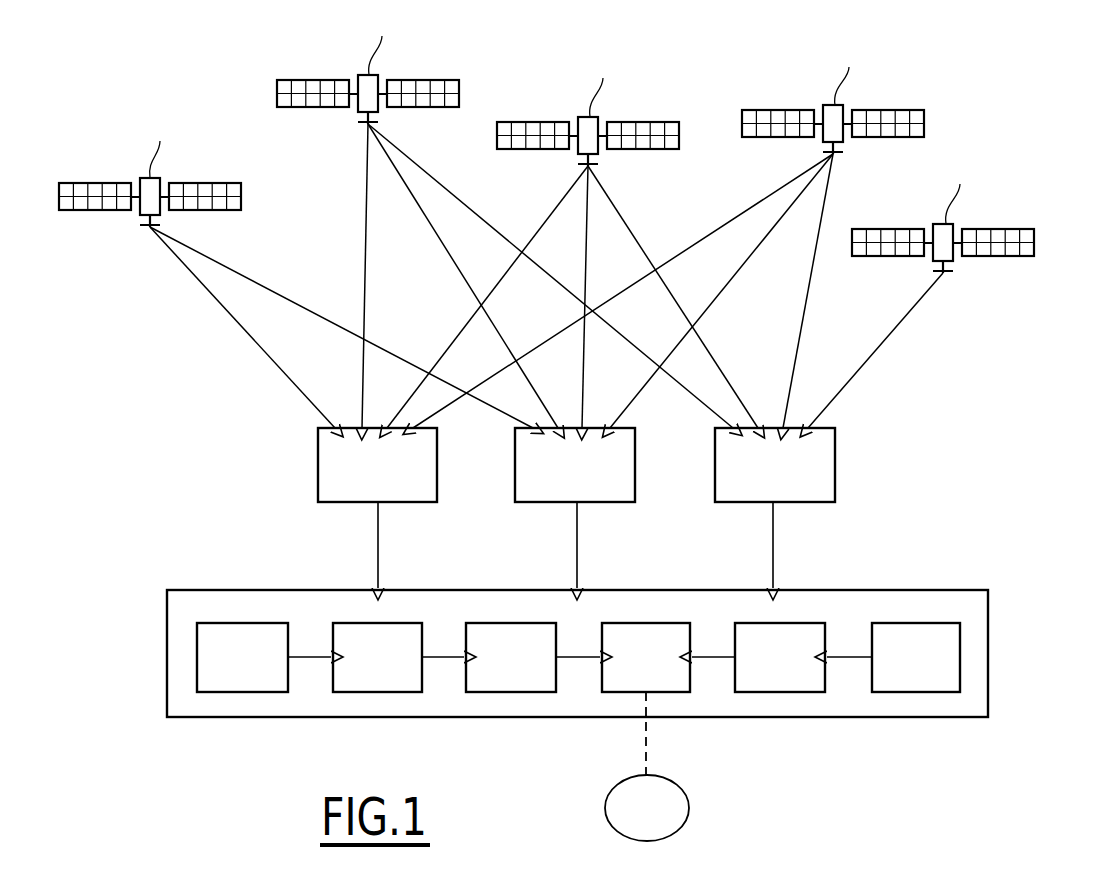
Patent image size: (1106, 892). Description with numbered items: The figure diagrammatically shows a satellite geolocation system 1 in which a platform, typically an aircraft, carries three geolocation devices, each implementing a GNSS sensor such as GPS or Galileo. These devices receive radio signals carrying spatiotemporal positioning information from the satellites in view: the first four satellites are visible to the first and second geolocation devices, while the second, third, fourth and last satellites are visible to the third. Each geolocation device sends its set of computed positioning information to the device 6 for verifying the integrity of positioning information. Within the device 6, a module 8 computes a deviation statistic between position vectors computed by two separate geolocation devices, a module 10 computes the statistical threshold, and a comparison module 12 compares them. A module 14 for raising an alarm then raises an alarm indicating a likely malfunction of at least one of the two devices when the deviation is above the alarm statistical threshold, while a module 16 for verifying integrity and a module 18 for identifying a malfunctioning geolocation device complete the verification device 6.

The satellite geolocation system 1 is at (85, 387).
The device for verifying the integrity of positioning information 6 is at (988, 652).
The module for computing a deviation statistic 8 is at (242, 657).
The module for computing the statistical threshold 10 is at (377, 657).
The comparison module 12 is at (511, 657).
The module for raising an alarm 14 is at (646, 657).
The module for verifying integrity 16 is at (780, 657).
The module for identifying a malfunctioning geolocation device 18 is at (916, 657).